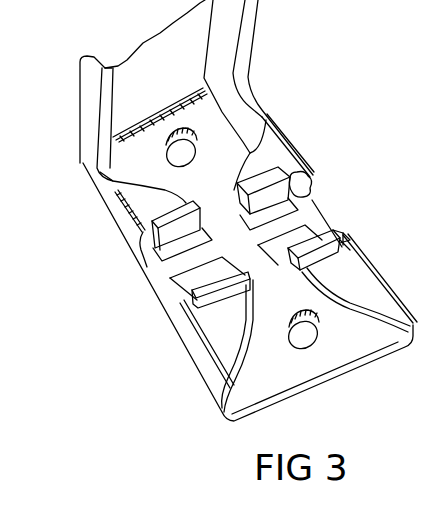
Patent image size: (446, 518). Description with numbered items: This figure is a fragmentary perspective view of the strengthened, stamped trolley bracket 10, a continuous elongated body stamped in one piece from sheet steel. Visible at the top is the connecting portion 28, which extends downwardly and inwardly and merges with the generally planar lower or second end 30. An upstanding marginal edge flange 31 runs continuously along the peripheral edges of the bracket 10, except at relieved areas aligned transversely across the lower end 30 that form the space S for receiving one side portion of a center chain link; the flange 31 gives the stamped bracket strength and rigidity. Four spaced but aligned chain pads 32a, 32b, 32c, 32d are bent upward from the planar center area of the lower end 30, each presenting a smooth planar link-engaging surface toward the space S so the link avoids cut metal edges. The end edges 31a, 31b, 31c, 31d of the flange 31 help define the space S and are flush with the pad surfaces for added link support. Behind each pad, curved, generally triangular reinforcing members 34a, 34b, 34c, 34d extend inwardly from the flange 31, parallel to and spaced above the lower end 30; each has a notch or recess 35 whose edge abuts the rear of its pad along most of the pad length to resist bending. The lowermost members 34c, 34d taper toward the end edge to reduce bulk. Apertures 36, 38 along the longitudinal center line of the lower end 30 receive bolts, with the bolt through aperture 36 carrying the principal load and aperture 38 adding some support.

The bracket 10 is at (336, 136).
The connecting portion 28 is at (177, 90).
The lower or second end 30 is at (207, 133).
The marginal edge flange 31 is at (87, 117).
The end edge of flange 31a is at (308, 187).
The end edge of flange 31b is at (143, 248).
The end edge of flange 31c is at (170, 292).
The end edge of flange 31d is at (350, 236).
The chain pad 32a is at (312, 168).
The chain pad 32b is at (160, 262).
The chain pad 32c is at (172, 300).
The chain pad 32d is at (315, 247).
The reinforcing member 34a is at (268, 155).
The reinforcing member 34b is at (157, 203).
The reinforcing member 34c is at (212, 352).
The reinforcing member 34d is at (380, 288).
The notch or recess 35 is at (143, 227).
The aperture 36 is at (170, 147).
The aperture 38 is at (318, 343).
The space S is at (322, 217).